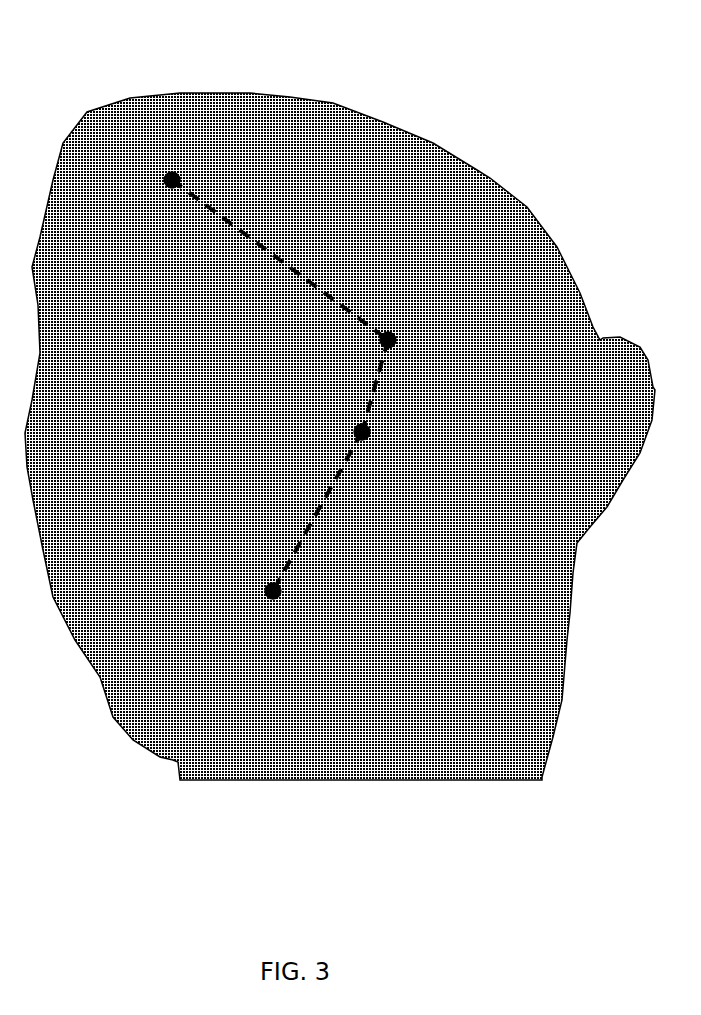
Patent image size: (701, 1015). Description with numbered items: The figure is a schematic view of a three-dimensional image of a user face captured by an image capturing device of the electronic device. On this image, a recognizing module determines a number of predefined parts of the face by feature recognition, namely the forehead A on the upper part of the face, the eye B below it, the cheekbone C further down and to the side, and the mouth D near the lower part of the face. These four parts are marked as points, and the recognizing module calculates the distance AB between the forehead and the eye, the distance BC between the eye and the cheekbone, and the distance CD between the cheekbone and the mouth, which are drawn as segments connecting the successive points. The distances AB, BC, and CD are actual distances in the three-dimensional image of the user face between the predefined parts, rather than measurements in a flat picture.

The forehead A is at (177, 172).
The eye B is at (396, 334).
The cheekbone C is at (370, 440).
The mouth D is at (265, 595).
The distance between the forehead and the eye AB is at (280, 260).
The distance between the eye and the cheekbone BC is at (391, 386).
The distance between the cheekbone and the mouth CD is at (320, 511).